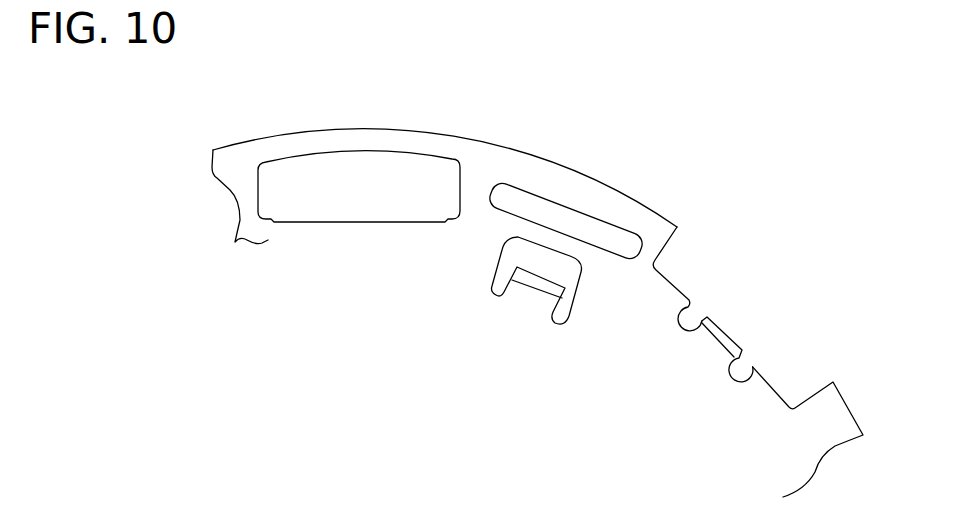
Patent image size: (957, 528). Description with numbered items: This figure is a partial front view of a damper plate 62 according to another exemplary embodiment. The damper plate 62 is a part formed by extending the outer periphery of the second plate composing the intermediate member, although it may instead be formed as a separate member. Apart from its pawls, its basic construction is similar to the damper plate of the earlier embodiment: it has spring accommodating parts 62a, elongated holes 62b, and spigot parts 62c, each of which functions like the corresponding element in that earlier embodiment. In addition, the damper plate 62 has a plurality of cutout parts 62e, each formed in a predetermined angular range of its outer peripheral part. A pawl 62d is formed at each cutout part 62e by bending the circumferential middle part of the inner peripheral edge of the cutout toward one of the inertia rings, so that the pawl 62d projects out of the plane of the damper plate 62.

The damper plate 62 is at (622, 182).
The spring accommodating part 62a is at (361, 147).
The elongated hole 62b is at (525, 186).
The spigot part 62c is at (542, 284).
The pawl 62d is at (720, 337).
The cutout part 62e is at (672, 238).